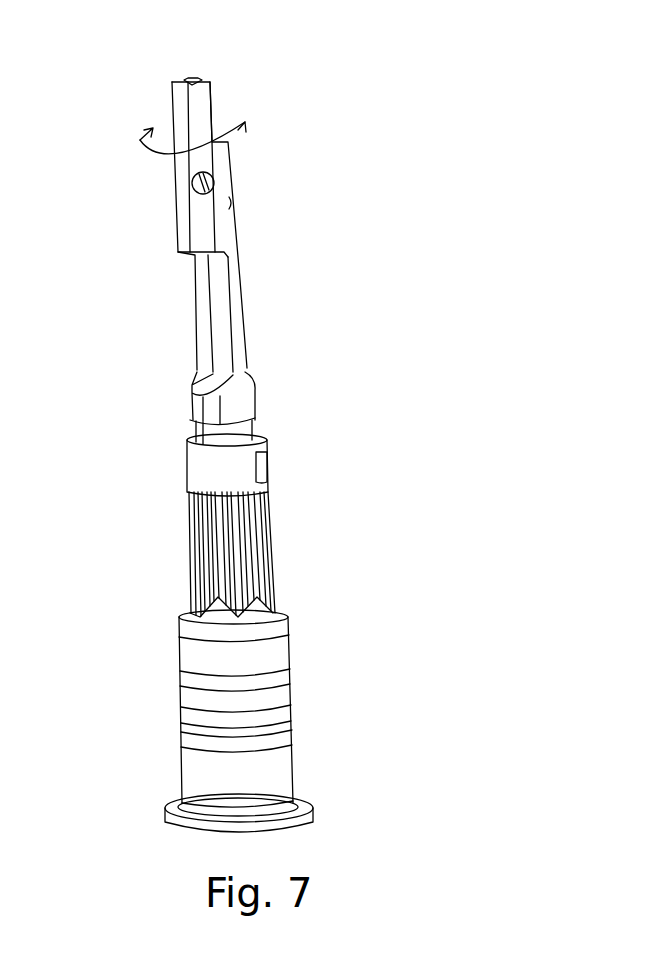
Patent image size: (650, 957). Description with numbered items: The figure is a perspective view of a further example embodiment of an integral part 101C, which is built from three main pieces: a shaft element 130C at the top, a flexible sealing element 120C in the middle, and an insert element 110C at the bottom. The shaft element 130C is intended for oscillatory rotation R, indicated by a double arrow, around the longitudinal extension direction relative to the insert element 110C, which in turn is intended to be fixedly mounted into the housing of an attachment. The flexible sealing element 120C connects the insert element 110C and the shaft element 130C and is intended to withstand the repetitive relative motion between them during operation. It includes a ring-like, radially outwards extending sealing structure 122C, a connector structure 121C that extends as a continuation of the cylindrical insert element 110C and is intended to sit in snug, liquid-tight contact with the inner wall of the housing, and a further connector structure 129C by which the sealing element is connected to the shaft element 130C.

The integral part 101C is at (472, 85).
The shaft element 130C is at (315, 270).
The oscillatory rotation R is at (225, 143).
The further connector structure 129C is at (267, 437).
The flexible sealing element 120C is at (323, 522).
The sealing structure 122C is at (188, 677).
The connector structure 121C is at (290, 692).
The insert element 110C is at (338, 754).